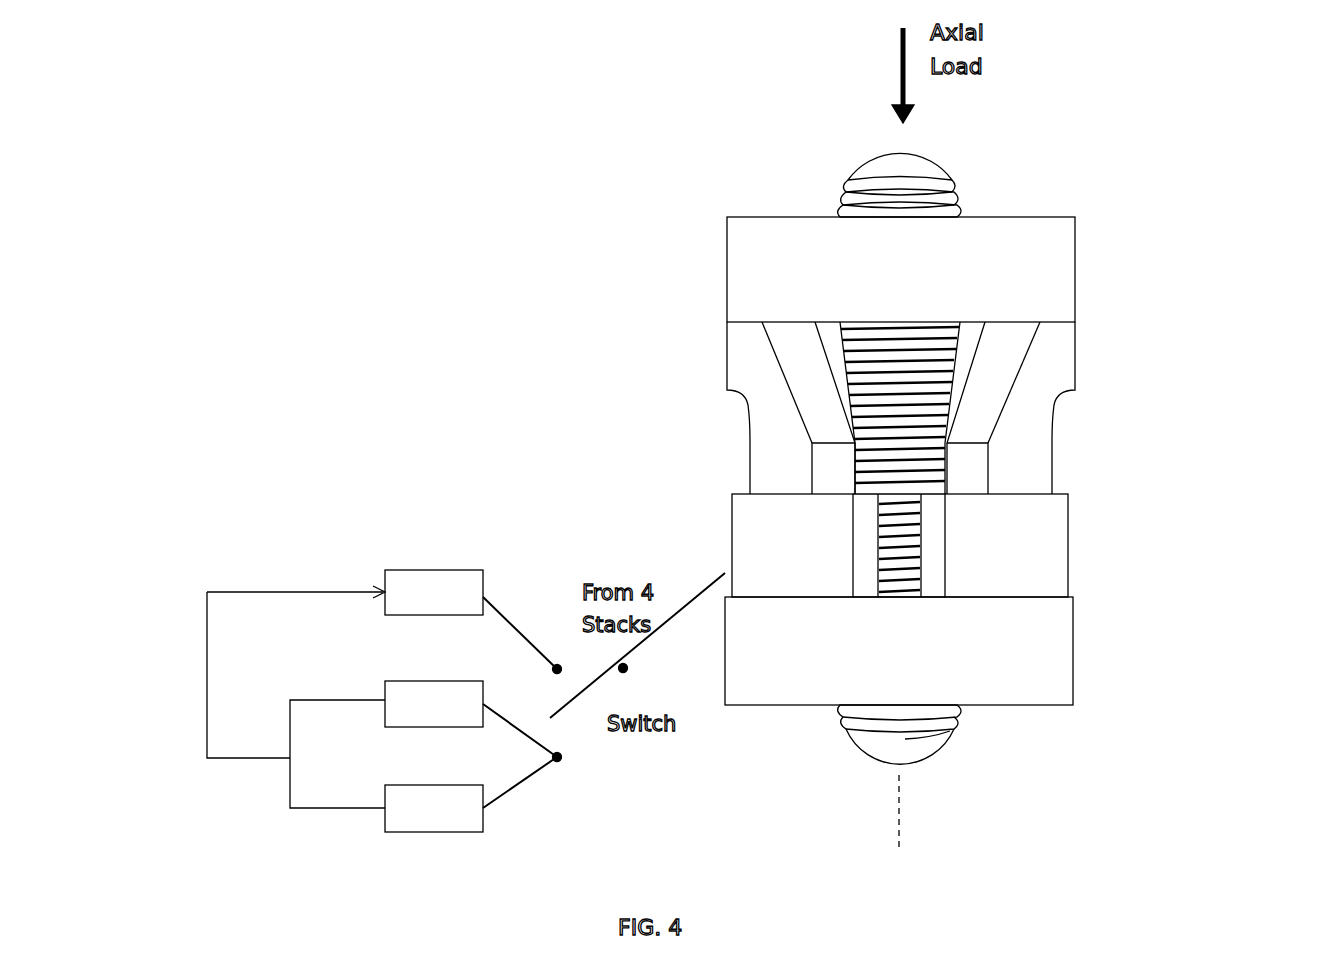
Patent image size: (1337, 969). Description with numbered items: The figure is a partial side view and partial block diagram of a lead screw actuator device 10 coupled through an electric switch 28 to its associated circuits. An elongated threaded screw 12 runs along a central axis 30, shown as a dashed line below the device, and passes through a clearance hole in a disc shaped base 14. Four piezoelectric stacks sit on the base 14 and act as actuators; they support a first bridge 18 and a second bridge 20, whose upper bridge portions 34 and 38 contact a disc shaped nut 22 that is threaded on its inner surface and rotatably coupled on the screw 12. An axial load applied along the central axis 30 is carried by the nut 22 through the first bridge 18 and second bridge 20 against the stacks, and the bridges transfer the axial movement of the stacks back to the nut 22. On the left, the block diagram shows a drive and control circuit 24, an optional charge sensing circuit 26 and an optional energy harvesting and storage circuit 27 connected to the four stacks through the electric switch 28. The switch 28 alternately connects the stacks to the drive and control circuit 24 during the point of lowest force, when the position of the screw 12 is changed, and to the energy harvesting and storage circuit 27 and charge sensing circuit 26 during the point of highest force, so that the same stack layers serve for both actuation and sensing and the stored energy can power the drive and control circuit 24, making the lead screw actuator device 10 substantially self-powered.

The lead screw actuator device 10 is at (1190, 179).
The screw 12 is at (962, 177).
The base 14 is at (1076, 657).
The first bridge 18 is at (712, 385).
The second bridge 20 is at (1080, 388).
The nut 22 is at (1080, 274).
The drive and control circuit 24 is at (434, 592).
The charge sensing circuit 26 is at (434, 704).
The energy harvesting and storage circuit 27 is at (434, 808).
The electric switch 28 is at (578, 664).
The central axis 30 is at (912, 815).
The upper bridge portion 34 is at (752, 348).
The upper bridge portion 38 is at (1053, 350).